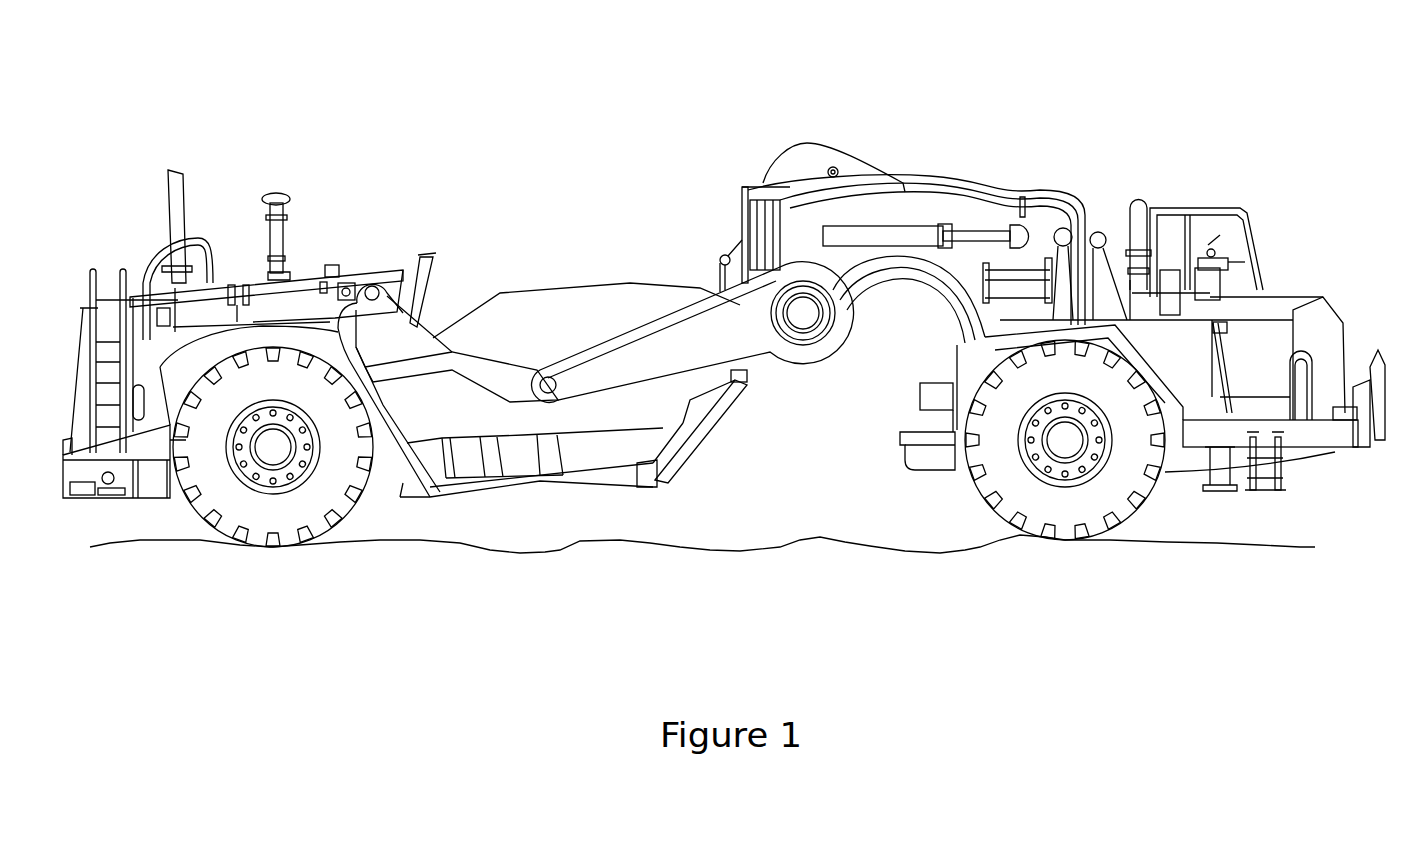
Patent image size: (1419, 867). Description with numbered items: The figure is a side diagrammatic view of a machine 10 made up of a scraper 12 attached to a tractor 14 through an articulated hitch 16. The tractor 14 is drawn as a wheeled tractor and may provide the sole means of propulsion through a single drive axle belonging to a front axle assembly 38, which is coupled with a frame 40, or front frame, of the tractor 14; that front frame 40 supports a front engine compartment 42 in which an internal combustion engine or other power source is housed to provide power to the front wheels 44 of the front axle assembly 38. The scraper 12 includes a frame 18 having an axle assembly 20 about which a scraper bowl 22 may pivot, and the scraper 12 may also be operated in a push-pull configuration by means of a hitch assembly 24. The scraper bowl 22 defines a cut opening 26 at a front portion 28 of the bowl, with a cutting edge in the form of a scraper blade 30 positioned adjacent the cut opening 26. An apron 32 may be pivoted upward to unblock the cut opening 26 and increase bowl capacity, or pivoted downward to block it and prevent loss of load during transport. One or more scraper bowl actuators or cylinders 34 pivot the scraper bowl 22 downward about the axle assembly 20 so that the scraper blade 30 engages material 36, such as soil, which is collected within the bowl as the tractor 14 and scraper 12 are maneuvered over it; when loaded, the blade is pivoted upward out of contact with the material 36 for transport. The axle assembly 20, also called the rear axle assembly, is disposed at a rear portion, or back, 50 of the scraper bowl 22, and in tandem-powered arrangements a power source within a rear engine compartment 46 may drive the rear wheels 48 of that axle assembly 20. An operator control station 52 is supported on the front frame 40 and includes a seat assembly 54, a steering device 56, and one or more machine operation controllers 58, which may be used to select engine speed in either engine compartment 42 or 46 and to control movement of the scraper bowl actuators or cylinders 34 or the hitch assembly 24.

The machine 10 is at (843, 77).
The scraper 12 is at (375, 190).
The tractor 14 is at (1185, 150).
The articulated hitch 16 is at (883, 167).
The frame 18 is at (385, 478).
The axle assembly 20 is at (272, 447).
The scraper bowl 22 is at (472, 413).
The hitch assembly 24 is at (1387, 388).
The cut opening 26 is at (690, 460).
The front portion 28 is at (723, 192).
The scraper blade 30 is at (638, 480).
The apron 32 is at (708, 430).
The scraper bowl actuators or cylinders 34 is at (733, 230).
The material 36 is at (1300, 540).
The front axle assembly 38 is at (1065, 443).
The frame 40 is at (1212, 457).
The front engine compartment 42 is at (1320, 323).
The front wheels 44 is at (1033, 503).
The rear engine compartment 46 is at (297, 307).
The rear wheels 48 is at (243, 505).
The rear portion 50 is at (405, 245).
The operator control station 52 is at (1217, 213).
The seat assembly 54 is at (1173, 237).
The steering device 56 is at (1240, 265).
The machine operation controllers 58 is at (1213, 250).